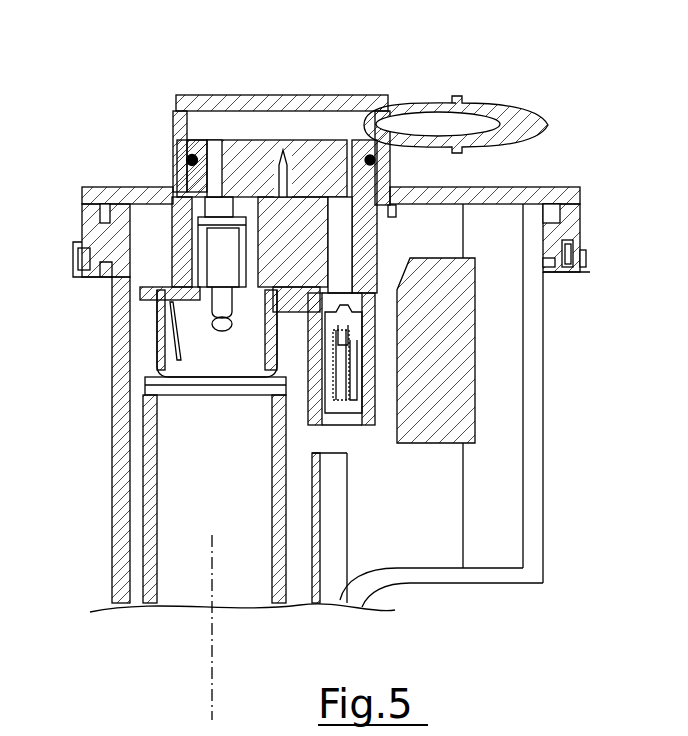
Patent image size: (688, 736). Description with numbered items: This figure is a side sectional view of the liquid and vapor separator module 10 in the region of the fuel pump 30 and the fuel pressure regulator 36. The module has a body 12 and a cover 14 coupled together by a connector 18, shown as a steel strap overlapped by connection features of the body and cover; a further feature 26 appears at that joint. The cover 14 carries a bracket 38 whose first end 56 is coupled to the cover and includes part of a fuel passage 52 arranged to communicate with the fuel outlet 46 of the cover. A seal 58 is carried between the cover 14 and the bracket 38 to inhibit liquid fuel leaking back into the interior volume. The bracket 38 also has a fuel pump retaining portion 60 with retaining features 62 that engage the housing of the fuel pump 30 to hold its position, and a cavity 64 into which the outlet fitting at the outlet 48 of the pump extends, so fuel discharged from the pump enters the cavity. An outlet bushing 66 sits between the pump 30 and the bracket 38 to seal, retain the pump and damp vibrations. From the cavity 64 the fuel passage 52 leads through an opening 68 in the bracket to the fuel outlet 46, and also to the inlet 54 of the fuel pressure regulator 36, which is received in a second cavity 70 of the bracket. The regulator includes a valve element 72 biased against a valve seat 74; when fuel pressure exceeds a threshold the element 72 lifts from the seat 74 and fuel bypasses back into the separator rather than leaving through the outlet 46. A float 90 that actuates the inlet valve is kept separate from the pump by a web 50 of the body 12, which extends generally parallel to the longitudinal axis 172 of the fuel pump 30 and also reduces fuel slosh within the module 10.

The liquid and vapor separator module 10 is at (551, 95).
The body 12 is at (543, 418).
The cover 14 is at (228, 100).
The connector 18 is at (585, 257).
The latch 26 is at (575, 267).
The fuel pump 30 is at (150, 543).
The fuel pressure regulator 36 is at (376, 402).
The bracket 38 is at (363, 242).
The fuel outlet 46 is at (427, 122).
The outlet of the fuel pump 48 is at (213, 253).
The web 50 is at (335, 545).
The fuel passage 52 is at (222, 200).
The inlet of the pressure regulator 54 is at (298, 323).
The first end 56 is at (197, 133).
The seal 58 is at (186, 160).
The fuel pump retaining portion 60 is at (147, 327).
The retaining feature 62 is at (280, 308).
The cavity 64 is at (180, 252).
The outlet bushing 66 is at (190, 228).
The opening 68 is at (350, 158).
The second cavity 70 is at (332, 312).
The valve element 72 is at (307, 413).
The valve seat 74 is at (342, 310).
The float 90 is at (455, 357).
The longitudinal axis 172 is at (212, 637).